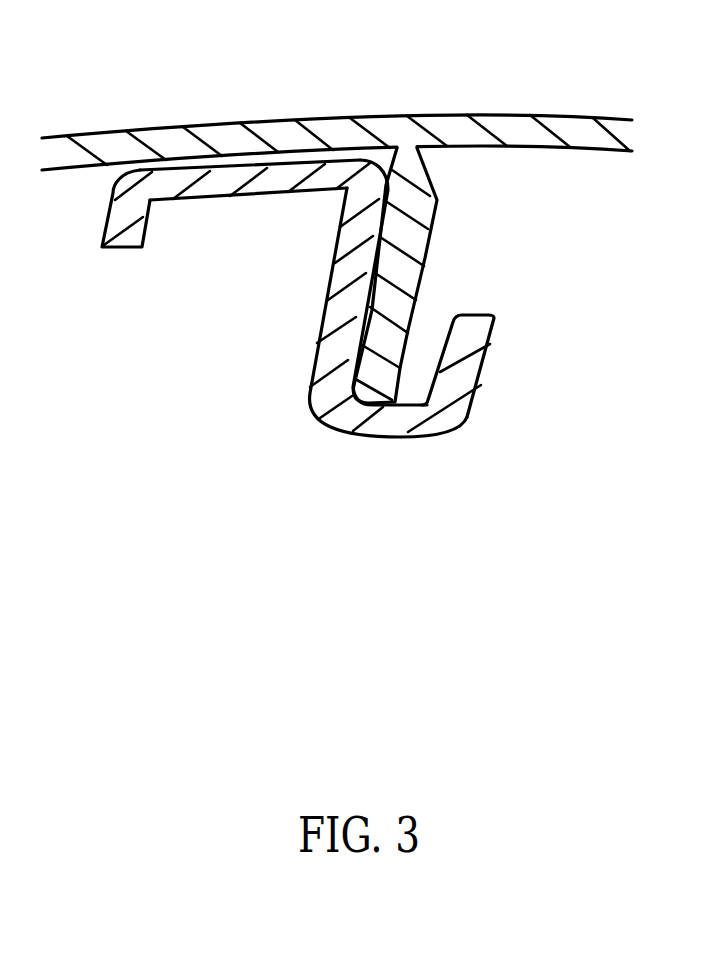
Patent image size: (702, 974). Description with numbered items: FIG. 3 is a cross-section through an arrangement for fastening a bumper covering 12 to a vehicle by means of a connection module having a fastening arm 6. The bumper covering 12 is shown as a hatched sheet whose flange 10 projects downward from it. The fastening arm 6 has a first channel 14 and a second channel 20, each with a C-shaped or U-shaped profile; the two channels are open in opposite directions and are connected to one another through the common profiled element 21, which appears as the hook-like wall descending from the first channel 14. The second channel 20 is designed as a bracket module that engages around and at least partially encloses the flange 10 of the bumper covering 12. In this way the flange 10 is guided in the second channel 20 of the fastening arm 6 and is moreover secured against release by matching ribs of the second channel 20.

The bumper covering 12 is at (550, 100).
The flange 10 is at (418, 254).
The first channel 14 is at (240, 222).
The fastening arm 6 is at (82, 270).
The common profiled element 21 is at (343, 285).
The second channel 20 is at (438, 315).